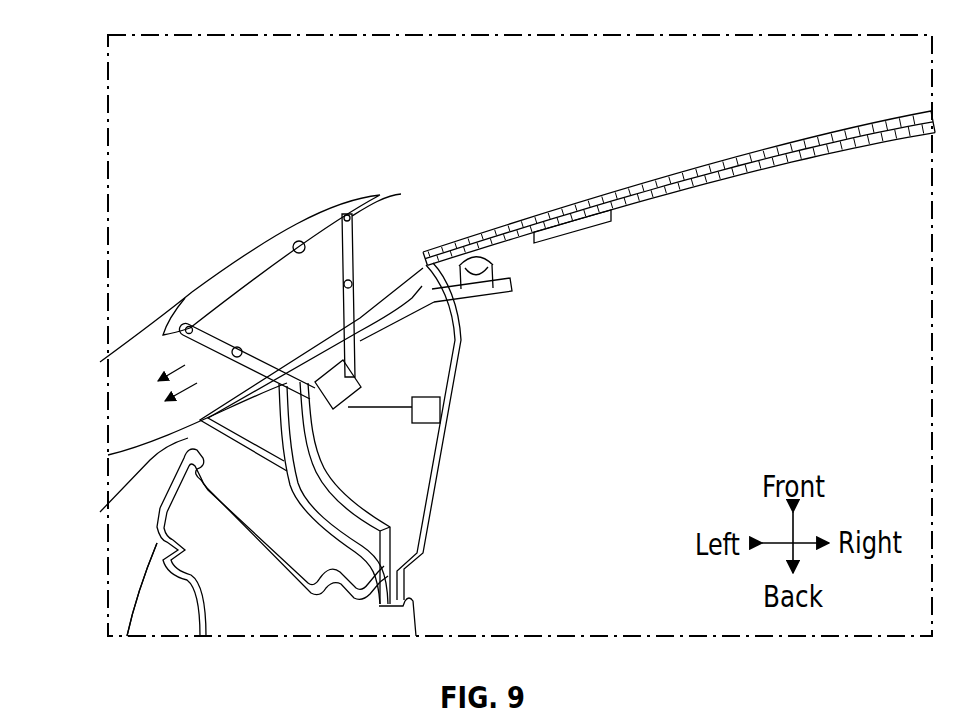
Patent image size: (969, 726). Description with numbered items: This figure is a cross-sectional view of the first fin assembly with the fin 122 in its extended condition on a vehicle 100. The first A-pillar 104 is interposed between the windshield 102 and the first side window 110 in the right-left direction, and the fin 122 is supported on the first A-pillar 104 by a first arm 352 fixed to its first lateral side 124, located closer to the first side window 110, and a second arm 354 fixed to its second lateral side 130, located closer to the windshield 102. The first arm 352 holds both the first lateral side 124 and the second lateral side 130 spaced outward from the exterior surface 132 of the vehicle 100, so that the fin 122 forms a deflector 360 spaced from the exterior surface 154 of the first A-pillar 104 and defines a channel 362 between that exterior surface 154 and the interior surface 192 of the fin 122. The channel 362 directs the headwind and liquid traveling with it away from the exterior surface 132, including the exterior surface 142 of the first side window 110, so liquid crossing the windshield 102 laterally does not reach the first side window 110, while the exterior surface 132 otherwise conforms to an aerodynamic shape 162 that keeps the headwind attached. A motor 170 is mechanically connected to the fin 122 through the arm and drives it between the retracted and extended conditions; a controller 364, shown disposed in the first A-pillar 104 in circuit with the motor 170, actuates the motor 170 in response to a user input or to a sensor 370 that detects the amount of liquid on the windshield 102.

The vehicle 100 is at (479, 111).
The windshield 102 is at (558, 209).
The first A-pillar 104 is at (414, 463).
The first side window 110 is at (137, 573).
The fin 122 is at (249, 251).
The first lateral side 124 is at (110, 355).
The second lateral side 130 is at (348, 212).
The exterior surface 132 is at (153, 535).
The exterior surface 142 is at (130, 607).
The exterior surface 154 is at (307, 340).
The aerodynamic shape 162 is at (157, 499).
The motor 170 is at (332, 401).
The interior surface 192 is at (299, 241).
The first arm 352 is at (196, 423).
The second arm 354 is at (430, 214).
The deflector 360 is at (310, 197).
The channel 362 is at (258, 295).
The controller 364 is at (428, 410).
The sensor 370 is at (574, 235).